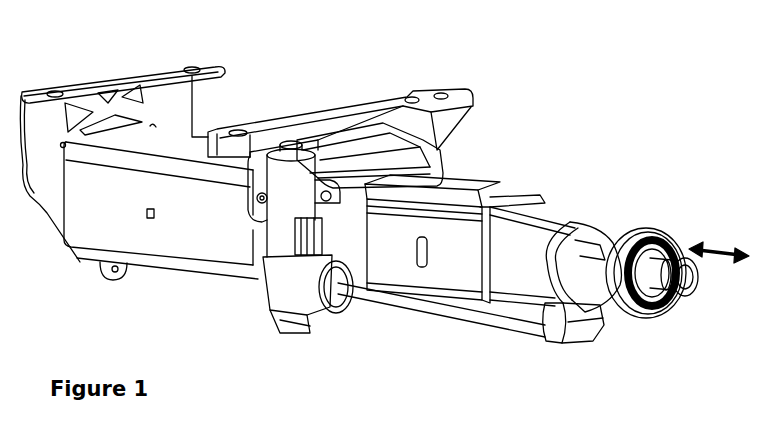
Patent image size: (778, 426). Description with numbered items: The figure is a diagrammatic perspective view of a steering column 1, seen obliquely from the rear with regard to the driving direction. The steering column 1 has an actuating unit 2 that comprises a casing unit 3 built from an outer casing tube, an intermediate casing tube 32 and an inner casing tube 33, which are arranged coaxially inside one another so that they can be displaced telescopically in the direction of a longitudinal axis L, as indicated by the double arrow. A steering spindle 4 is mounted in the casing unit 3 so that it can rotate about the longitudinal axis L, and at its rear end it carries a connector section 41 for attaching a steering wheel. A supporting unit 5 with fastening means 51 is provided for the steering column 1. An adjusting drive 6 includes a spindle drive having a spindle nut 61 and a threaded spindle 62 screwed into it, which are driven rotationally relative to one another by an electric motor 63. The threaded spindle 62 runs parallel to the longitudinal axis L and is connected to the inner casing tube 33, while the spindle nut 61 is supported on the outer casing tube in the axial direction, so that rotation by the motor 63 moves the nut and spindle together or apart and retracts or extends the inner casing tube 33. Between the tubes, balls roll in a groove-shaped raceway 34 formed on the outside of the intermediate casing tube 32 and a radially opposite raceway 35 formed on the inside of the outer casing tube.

The steering column 1 is at (389, 51).
The actuating unit 2 is at (207, 115).
The casing unit 3 is at (165, 147).
The steering spindle 4 is at (648, 266).
The connector section 41 is at (680, 249).
The supporting unit 5 is at (130, 84).
The fastening means 51 is at (58, 91).
The adjusting drive 6 is at (318, 330).
The spindle nut 61 is at (343, 318).
The threaded spindle 62 is at (498, 315).
The motor 63 is at (288, 218).
The intermediate casing tube 32 is at (469, 193).
The inner casing tube 33 is at (538, 240).
The raceway 34 is at (458, 216).
The raceway 35 is at (358, 187).
The longitudinal axis L is at (733, 285).